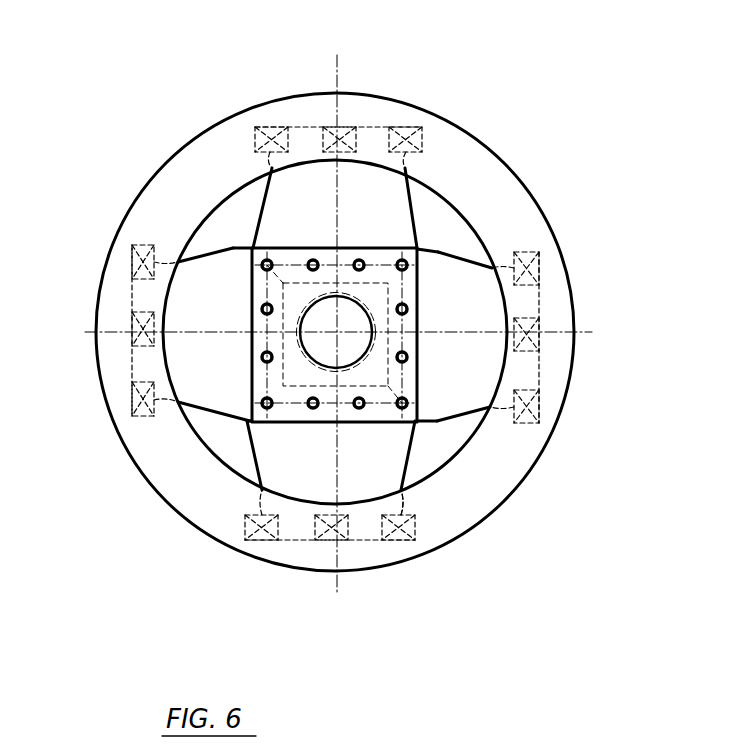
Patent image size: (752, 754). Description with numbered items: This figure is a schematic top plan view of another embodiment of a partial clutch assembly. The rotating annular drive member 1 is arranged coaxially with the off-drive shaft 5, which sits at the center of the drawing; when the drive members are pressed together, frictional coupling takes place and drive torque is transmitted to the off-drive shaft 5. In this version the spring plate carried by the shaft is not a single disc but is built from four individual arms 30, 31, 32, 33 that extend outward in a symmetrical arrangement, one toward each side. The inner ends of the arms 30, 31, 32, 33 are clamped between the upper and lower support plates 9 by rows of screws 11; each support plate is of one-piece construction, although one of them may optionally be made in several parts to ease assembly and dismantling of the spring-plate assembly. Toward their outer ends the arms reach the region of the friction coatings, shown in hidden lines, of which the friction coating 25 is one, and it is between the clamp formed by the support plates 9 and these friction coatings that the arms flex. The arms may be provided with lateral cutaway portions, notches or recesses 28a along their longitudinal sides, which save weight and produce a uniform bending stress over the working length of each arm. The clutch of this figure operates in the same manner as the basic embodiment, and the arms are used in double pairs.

The drive member 1 is at (198, 165).
The off-drive shaft 5 is at (350, 310).
The support plates 9 is at (378, 380).
The screws 11 is at (383, 262).
The friction coating 25 is at (408, 133).
The recesses 28a is at (402, 505).
The arm 30 is at (200, 282).
The arm 31 is at (483, 304).
The arm 32 is at (306, 172).
The arm 33 is at (293, 480).